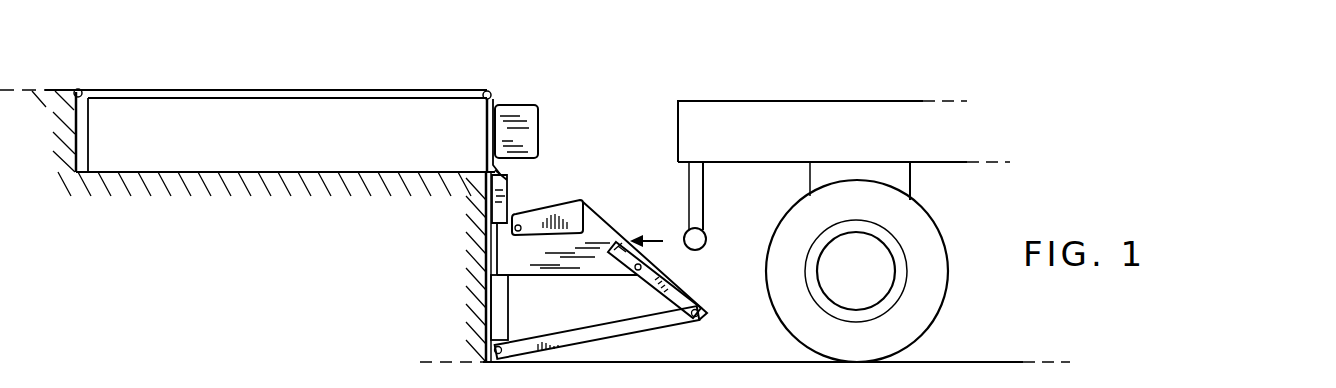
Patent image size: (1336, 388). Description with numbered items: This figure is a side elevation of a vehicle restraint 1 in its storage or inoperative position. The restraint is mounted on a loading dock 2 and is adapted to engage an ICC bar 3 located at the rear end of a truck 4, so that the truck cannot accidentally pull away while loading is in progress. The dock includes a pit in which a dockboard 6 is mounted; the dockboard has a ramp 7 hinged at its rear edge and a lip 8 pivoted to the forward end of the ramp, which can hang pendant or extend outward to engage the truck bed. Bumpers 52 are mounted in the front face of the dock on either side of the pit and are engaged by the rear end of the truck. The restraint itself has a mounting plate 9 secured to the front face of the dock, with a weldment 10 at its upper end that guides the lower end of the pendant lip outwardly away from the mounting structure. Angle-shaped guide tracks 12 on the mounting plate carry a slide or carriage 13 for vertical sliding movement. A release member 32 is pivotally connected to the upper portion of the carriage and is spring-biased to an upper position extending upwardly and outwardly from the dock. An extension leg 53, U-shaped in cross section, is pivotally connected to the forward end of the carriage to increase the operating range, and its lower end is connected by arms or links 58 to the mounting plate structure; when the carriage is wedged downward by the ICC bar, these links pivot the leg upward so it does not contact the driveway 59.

The vehicle restraint 1 is at (605, 207).
The loading dock 2 is at (60, 102).
The ICC bar 3 is at (706, 232).
The truck 4 is at (797, 100).
The dockboard 6 is at (361, 87).
The ramp 7 is at (300, 90).
The lip 8 is at (490, 122).
The mounting plate 9 is at (492, 316).
The weldment 10 is at (508, 171).
The guide tracks 12 is at (498, 287).
The slide or carriage 13 is at (580, 280).
The release member 32 is at (545, 208).
The bumpers 52 is at (540, 110).
The extension leg 53 is at (685, 297).
The arms or links 58 is at (645, 327).
The driveway 59 is at (968, 361).